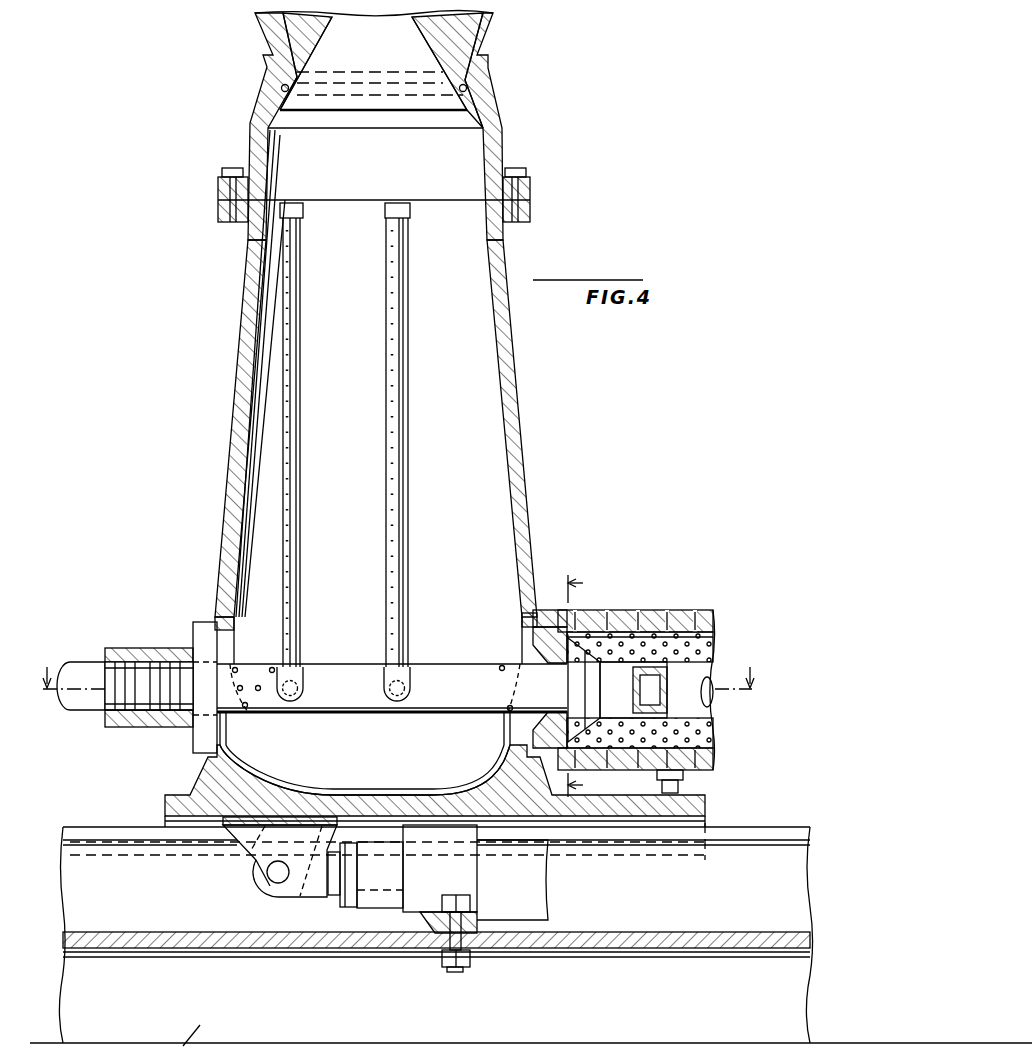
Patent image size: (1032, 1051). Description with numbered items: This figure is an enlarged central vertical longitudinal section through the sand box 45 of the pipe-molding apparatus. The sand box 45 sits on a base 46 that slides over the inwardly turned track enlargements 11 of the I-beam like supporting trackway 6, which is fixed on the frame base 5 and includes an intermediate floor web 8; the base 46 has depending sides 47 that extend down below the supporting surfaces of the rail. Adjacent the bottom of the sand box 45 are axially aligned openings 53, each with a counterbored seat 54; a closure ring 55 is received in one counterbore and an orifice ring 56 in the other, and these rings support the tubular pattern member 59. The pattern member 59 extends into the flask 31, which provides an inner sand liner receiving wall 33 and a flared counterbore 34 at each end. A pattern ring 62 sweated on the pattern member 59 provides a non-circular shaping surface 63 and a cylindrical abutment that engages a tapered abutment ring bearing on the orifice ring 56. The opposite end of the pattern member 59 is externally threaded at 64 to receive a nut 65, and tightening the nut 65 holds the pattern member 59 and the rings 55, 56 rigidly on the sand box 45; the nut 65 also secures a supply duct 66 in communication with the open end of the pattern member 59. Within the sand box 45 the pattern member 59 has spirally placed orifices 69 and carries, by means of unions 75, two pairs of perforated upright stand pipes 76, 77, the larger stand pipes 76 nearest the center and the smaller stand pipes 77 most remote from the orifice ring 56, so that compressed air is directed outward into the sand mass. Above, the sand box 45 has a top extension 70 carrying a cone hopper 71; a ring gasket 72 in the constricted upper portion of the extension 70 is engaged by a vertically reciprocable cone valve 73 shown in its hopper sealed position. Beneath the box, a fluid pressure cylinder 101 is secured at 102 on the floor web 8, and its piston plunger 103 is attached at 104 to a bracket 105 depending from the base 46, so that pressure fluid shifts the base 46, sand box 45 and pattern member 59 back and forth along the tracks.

The base 5 is at (397, 666).
The supporting trackway 6 is at (583, 685).
The intermediate floor web 8 is at (660, 943).
The track enlargements 11 is at (122, 812).
The flask 31 is at (673, 607).
The inner sand liner receiving wall 33 is at (702, 738).
The flared counterbore 34 is at (580, 633).
The sand box 45 is at (522, 505).
The base 46 is at (193, 803).
The depending sides 47 is at (217, 855).
The openings 53 is at (227, 730).
The counterbored seat 54 is at (258, 742).
The closure ring 55 is at (202, 628).
The orifice ring 56 is at (548, 620).
The tubular pattern member 59 is at (335, 672).
The pattern ring 62 is at (600, 688).
The non-circular shaping surface 63 is at (662, 688).
The threaded end 64 is at (173, 673).
The nut 65 is at (117, 725).
The supply duct 66 is at (78, 667).
The orifices 69 is at (246, 703).
The top extension 70 is at (499, 143).
The cone hopper 71 is at (490, 22).
The ring gasket 72 is at (466, 89).
The cone valve 73 is at (327, 42).
The unions 75 is at (383, 692).
The stand pipes 76 is at (408, 520).
The stand pipes 77 is at (300, 527).
The fluid pressure cylinder 101 is at (535, 886).
The securing means 102 is at (462, 969).
The piston plunger 103 is at (337, 880).
The attachment 104 is at (280, 878).
The bracket 105 is at (247, 867).